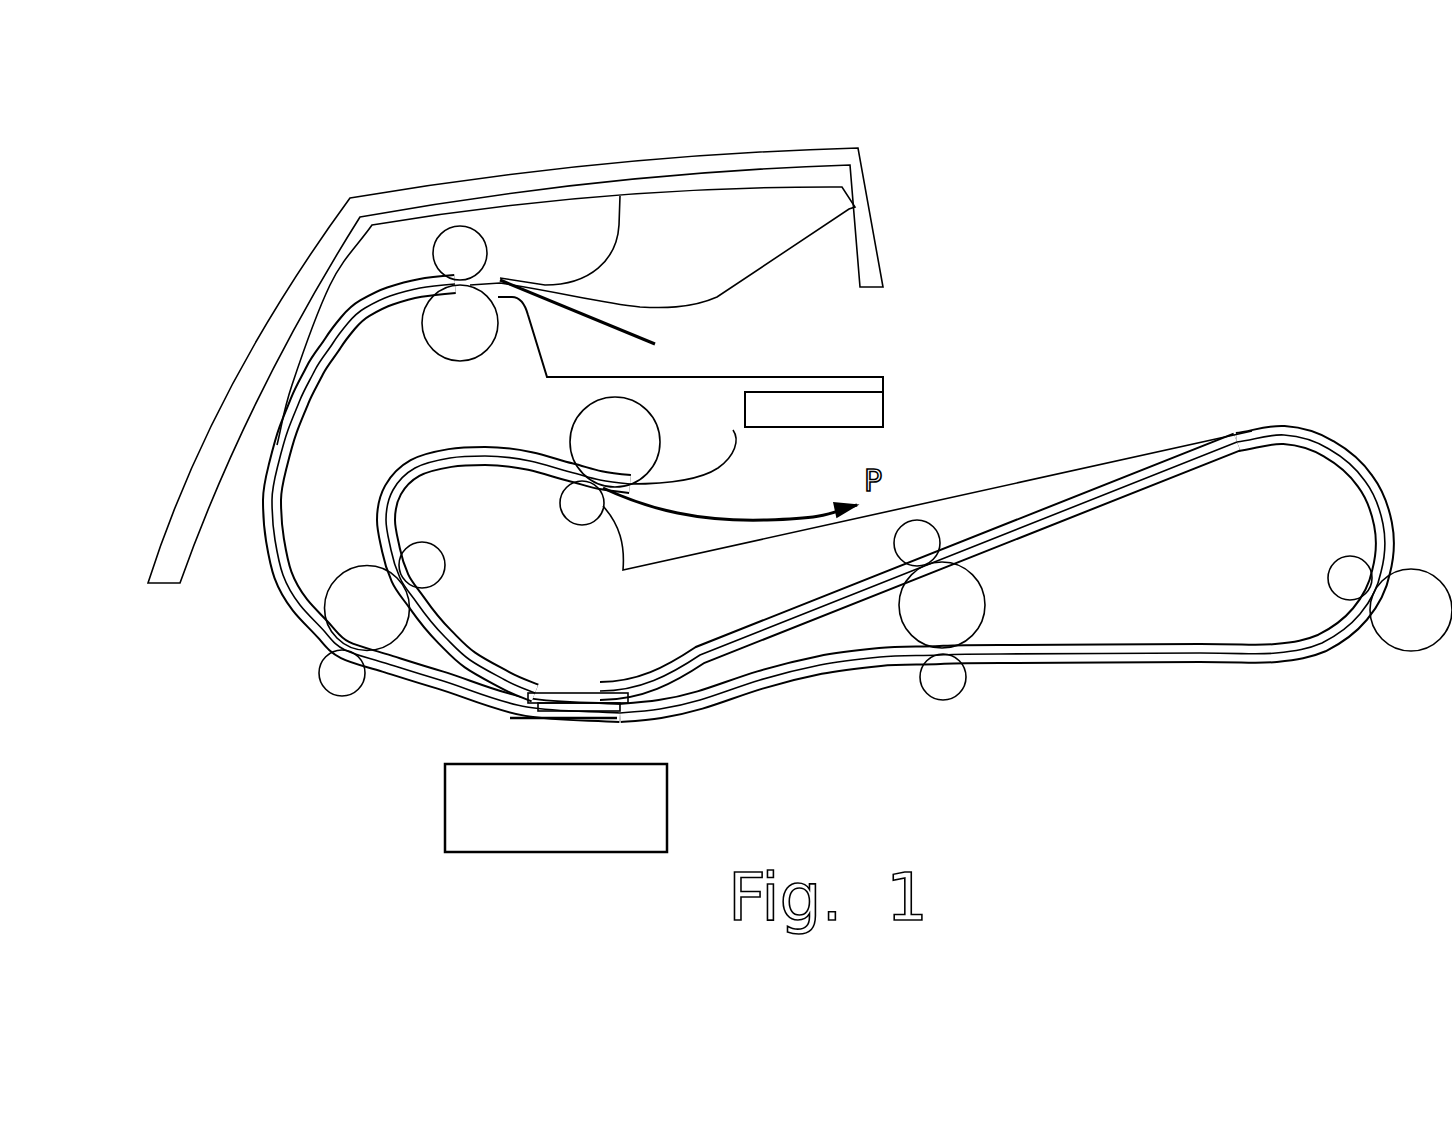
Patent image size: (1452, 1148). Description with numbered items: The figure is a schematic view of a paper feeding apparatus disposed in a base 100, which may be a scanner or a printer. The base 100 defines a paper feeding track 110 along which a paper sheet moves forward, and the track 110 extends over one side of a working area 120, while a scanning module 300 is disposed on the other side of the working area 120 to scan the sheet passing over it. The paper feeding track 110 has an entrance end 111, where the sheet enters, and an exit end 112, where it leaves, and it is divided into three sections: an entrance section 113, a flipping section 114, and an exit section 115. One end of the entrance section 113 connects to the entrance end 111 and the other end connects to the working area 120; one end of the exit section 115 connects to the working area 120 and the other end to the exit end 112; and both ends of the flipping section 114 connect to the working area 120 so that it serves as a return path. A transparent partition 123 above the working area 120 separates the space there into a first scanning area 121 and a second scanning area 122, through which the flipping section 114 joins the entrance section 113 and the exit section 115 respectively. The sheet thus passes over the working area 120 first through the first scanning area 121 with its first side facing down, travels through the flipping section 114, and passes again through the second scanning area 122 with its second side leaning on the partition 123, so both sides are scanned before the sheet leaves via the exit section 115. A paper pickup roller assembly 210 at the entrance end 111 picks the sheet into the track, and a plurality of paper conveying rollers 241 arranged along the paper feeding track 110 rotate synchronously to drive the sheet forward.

The base 100 is at (990, 490).
The paper feeding track 110 is at (285, 623).
The entrance end 111 is at (522, 283).
The exit end 112 is at (639, 492).
The entrance section 113 is at (270, 445).
The flipping section 114 is at (1365, 467).
The exit section 115 is at (393, 492).
The working area 120 is at (556, 697).
The first scanning area 121 is at (617, 710).
The second scanning area 122 is at (567, 687).
The transparent partition 123 is at (590, 703).
The paper pickup roller assembly 210 is at (398, 278).
The paper conveying rollers 241 is at (367, 608).
The scanning module 300 is at (453, 837).